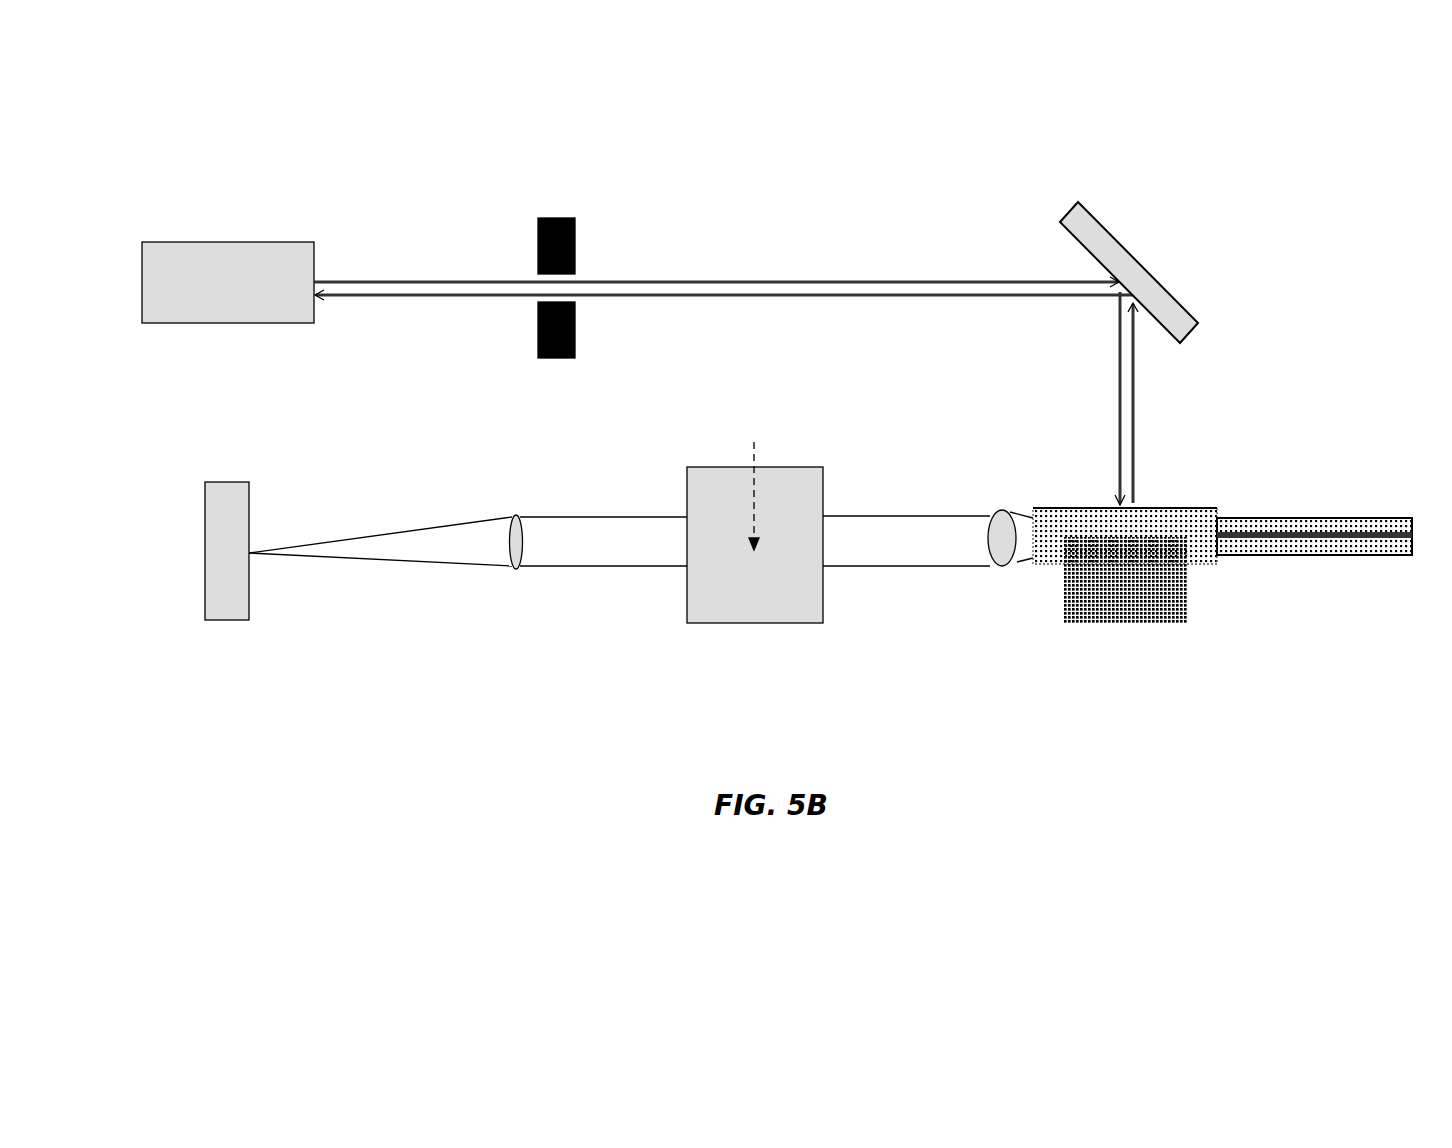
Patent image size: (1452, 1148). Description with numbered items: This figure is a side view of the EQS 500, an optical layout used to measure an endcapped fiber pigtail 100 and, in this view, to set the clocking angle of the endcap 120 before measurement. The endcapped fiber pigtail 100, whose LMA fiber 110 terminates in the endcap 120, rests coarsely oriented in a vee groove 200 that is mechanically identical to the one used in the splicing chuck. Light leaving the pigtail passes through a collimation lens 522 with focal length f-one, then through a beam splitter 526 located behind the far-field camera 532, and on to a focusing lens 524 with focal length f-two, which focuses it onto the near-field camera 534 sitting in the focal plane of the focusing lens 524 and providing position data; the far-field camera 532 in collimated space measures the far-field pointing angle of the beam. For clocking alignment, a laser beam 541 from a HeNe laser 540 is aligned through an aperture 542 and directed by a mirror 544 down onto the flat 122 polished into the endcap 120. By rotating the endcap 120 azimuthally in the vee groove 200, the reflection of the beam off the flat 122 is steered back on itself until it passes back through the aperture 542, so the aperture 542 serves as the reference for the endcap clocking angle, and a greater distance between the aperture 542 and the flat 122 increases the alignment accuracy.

The EQS 500 is at (209, 714).
The HeNe laser 540 is at (228, 304).
The laser beam 541 is at (726, 391).
The aperture 542 is at (557, 287).
The mirror 544 is at (1149, 272).
The near-field camera 534 is at (327, 535).
The focusing lens 524 is at (588, 534).
The far-field camera 532 is at (753, 600).
The beam splitter 526 is at (755, 443).
The collimation lens 522 is at (928, 528).
The endcapped fiber pigtail 100 is at (1345, 585).
The vee groove 200 is at (1122, 622).
The endcap 120 is at (1164, 572).
The LMA fiber 110 is at (1321, 523).
The flat 122 is at (1148, 503).